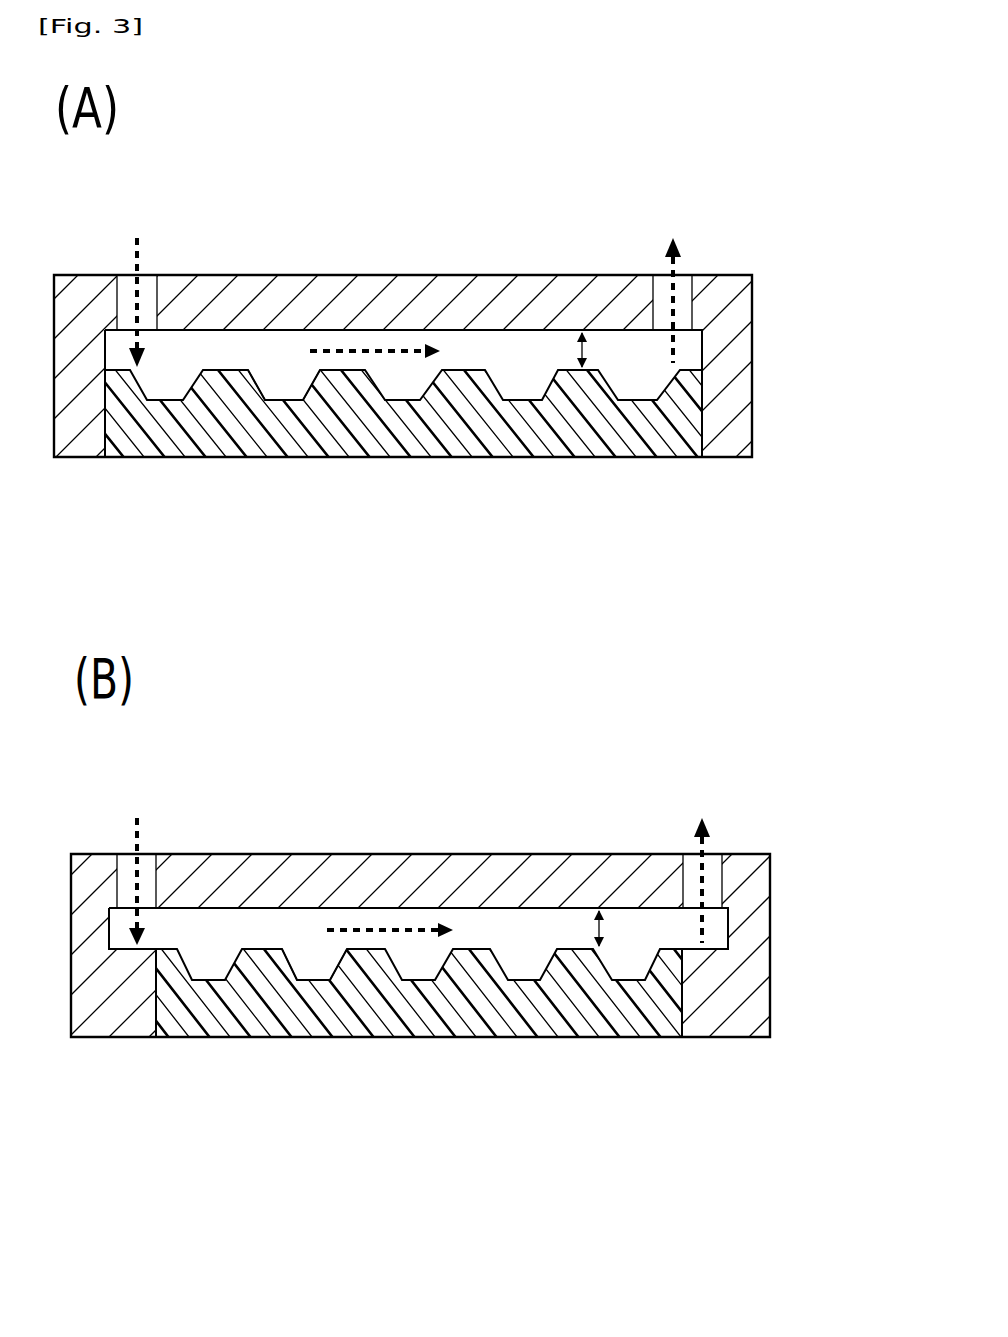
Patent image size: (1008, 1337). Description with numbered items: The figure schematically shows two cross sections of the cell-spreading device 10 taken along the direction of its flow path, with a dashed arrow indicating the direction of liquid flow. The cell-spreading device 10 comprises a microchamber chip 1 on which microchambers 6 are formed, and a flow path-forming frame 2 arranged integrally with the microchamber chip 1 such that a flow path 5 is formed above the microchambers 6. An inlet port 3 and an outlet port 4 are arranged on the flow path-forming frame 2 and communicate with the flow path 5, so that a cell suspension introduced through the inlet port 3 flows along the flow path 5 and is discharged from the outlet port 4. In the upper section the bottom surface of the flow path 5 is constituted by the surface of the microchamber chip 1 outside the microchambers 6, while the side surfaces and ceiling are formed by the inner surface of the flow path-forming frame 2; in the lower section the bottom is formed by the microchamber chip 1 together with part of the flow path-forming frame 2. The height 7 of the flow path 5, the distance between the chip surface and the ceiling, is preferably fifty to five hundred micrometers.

The microchamber chip 1 is at (560, 440).
The flow path-forming frame 2 is at (750, 372).
The inlet port 3 is at (122, 277).
The outlet port 4 is at (653, 294).
The flow path 5 is at (469, 356).
The microchamber 6 is at (264, 388).
The height of the flow path 7 is at (580, 332).
The cell-spreading device 10 is at (786, 248).